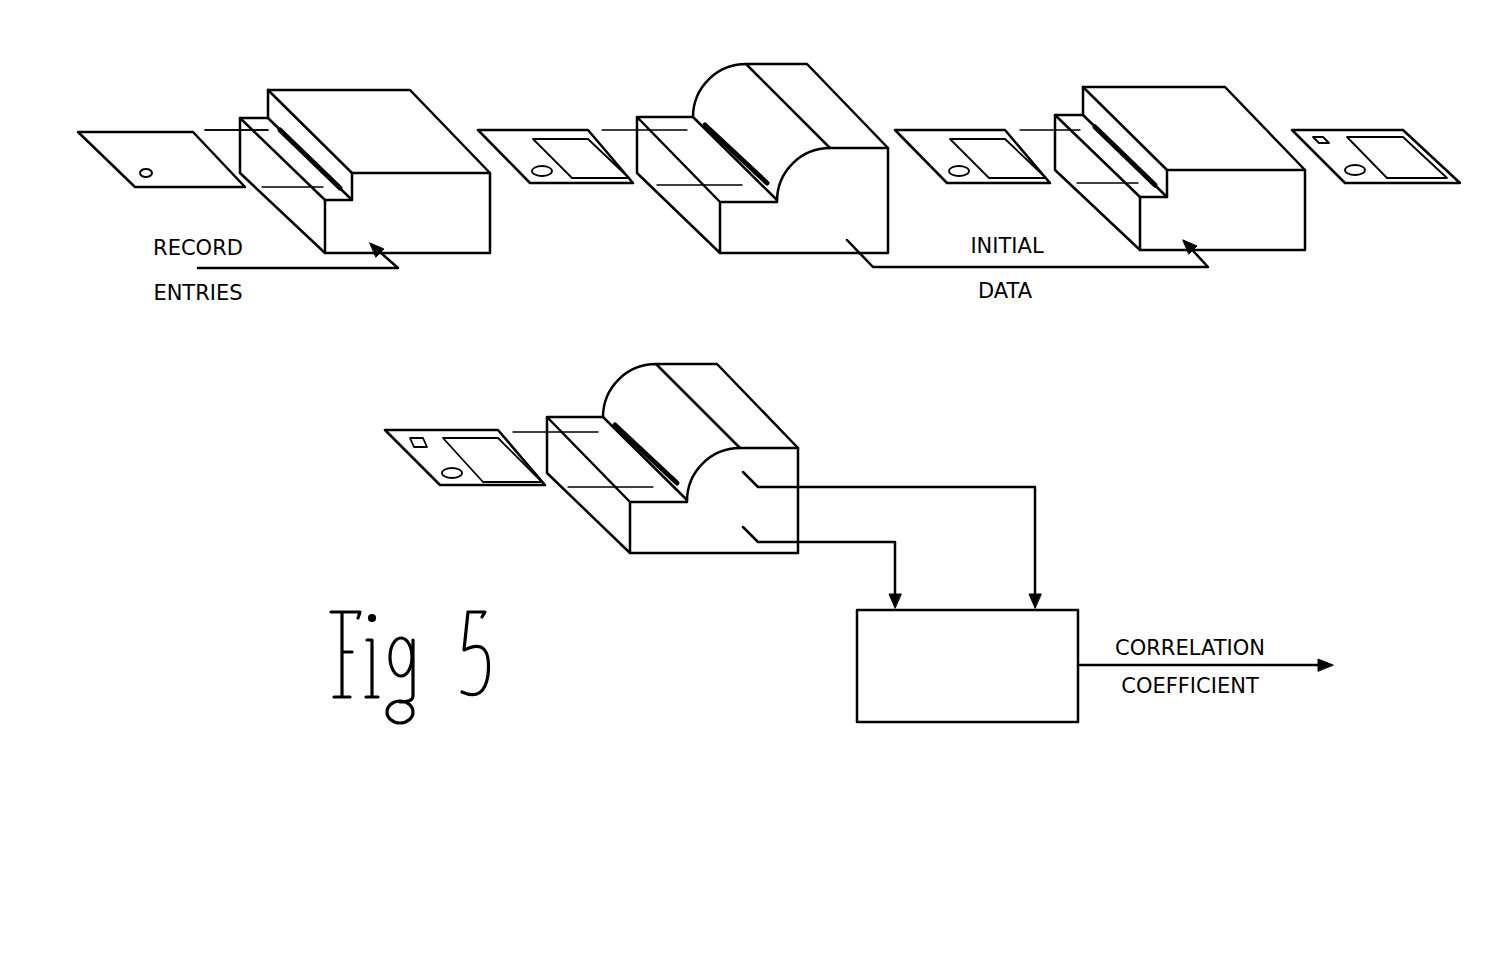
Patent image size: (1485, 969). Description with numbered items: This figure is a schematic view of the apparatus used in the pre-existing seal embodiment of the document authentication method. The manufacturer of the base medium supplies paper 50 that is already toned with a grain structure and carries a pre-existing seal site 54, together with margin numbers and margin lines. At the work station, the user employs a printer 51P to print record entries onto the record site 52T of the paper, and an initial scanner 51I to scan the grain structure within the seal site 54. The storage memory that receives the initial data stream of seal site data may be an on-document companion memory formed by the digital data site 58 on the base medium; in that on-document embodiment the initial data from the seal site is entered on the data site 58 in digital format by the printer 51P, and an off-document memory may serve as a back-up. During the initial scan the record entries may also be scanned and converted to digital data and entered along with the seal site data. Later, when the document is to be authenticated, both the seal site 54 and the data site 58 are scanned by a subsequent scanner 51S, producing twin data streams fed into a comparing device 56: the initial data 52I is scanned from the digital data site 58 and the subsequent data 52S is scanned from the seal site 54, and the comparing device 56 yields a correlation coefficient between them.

The paper 50 is at (178, 141).
The seal site 54 is at (146, 168).
The printer 51P is at (357, 113).
The record site 52T is at (582, 140).
The initial scanner 51I is at (721, 112).
The digital data site 58 is at (1331, 138).
The subsequent scanner 51S is at (630, 392).
The initial data 52I is at (1038, 517).
The subsequent data 52S is at (900, 573).
The comparing device 56 is at (967, 666).